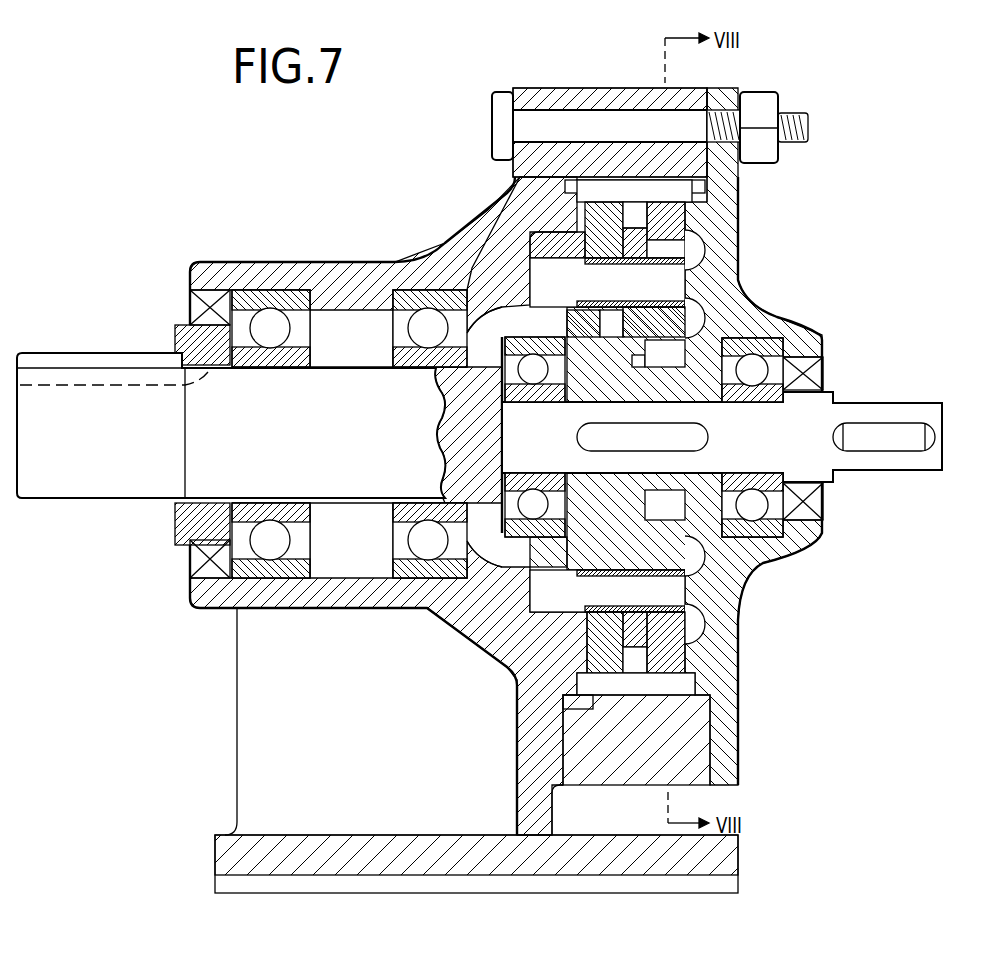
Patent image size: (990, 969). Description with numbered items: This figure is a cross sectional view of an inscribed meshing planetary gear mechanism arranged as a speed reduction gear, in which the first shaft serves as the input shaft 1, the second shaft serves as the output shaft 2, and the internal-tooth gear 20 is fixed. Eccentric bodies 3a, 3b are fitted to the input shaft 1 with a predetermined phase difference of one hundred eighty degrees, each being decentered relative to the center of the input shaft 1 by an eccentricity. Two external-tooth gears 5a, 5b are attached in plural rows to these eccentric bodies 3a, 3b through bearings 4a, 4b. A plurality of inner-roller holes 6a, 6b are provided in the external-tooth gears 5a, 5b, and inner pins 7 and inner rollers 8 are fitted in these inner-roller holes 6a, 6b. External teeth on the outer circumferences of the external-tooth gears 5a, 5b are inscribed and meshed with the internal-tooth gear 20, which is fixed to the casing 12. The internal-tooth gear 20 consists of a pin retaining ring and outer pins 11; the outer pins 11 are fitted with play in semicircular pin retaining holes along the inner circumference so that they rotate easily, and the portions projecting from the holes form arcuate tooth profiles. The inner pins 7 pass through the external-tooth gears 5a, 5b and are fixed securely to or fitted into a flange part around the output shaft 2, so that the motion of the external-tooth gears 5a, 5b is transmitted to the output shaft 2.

The input shaft 1 is at (898, 460).
The output shaft 2 is at (50, 488).
The eccentric body 3a is at (745, 398).
The eccentric body 3b is at (423, 588).
The bearing 4a is at (665, 355).
The bearing 4b is at (585, 640).
The external-tooth gear 5a is at (665, 217).
The external-tooth gear 5b is at (570, 700).
The inner-roller hole 6a is at (673, 248).
The inner-roller hole 6b is at (570, 318).
The inner pin 7 is at (700, 640).
The inner roller 8 is at (710, 700).
The outer pin 11 is at (577, 190).
The casing 12 is at (725, 192).
The internal-tooth gear 20 is at (572, 88).